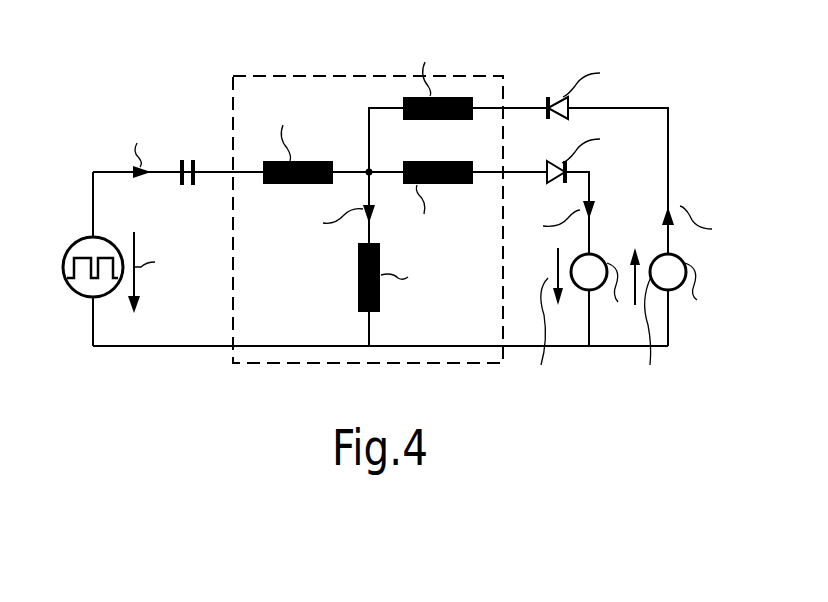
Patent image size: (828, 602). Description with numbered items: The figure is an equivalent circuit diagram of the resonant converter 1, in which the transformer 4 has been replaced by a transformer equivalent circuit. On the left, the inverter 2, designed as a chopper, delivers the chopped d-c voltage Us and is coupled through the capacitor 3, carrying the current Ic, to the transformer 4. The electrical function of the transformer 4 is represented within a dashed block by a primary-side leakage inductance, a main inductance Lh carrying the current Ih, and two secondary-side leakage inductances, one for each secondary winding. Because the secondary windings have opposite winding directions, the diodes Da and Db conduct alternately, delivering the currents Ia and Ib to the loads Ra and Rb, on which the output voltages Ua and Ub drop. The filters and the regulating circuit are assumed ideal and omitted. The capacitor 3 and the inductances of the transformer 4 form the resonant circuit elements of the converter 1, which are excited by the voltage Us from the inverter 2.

The resonant converter 1 is at (73, 396).
The inverter 2 is at (76, 243).
The capacitor 3 is at (182, 159).
The transformer 4 is at (322, 75).